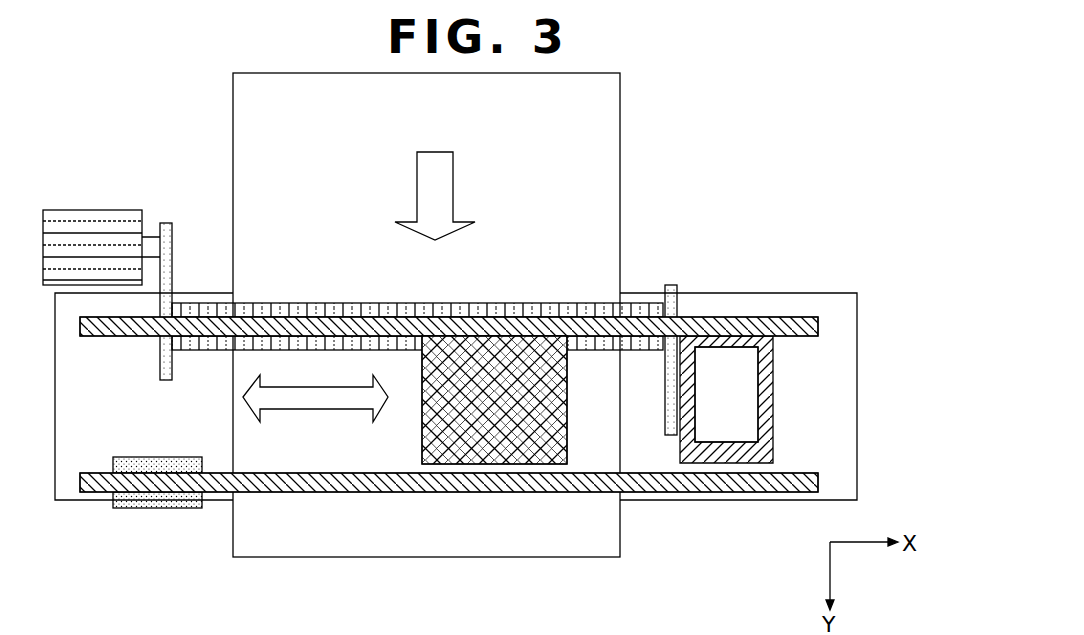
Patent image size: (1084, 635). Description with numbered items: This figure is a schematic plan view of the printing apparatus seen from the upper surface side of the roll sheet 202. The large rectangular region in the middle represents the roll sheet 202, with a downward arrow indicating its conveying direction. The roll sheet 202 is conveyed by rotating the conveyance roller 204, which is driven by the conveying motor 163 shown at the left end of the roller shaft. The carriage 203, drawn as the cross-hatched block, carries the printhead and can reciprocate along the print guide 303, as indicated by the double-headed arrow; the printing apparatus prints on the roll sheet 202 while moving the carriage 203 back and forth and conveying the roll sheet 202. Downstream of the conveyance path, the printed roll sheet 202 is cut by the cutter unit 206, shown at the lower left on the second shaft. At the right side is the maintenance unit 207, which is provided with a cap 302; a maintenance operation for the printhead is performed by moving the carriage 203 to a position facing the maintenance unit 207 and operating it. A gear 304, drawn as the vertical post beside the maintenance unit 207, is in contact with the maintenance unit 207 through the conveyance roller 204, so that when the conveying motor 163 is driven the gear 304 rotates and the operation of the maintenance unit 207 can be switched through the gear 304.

The conveying motor 163 is at (97, 210).
The roll sheet 202 is at (622, 125).
The carriage 203 is at (422, 440).
The conveyance roller 204 is at (300, 303).
The cutter unit 206 is at (160, 508).
The maintenance unit 207 is at (773, 447).
The cap 302 is at (737, 385).
The print guide 303 is at (759, 318).
The gear 304 is at (671, 435).